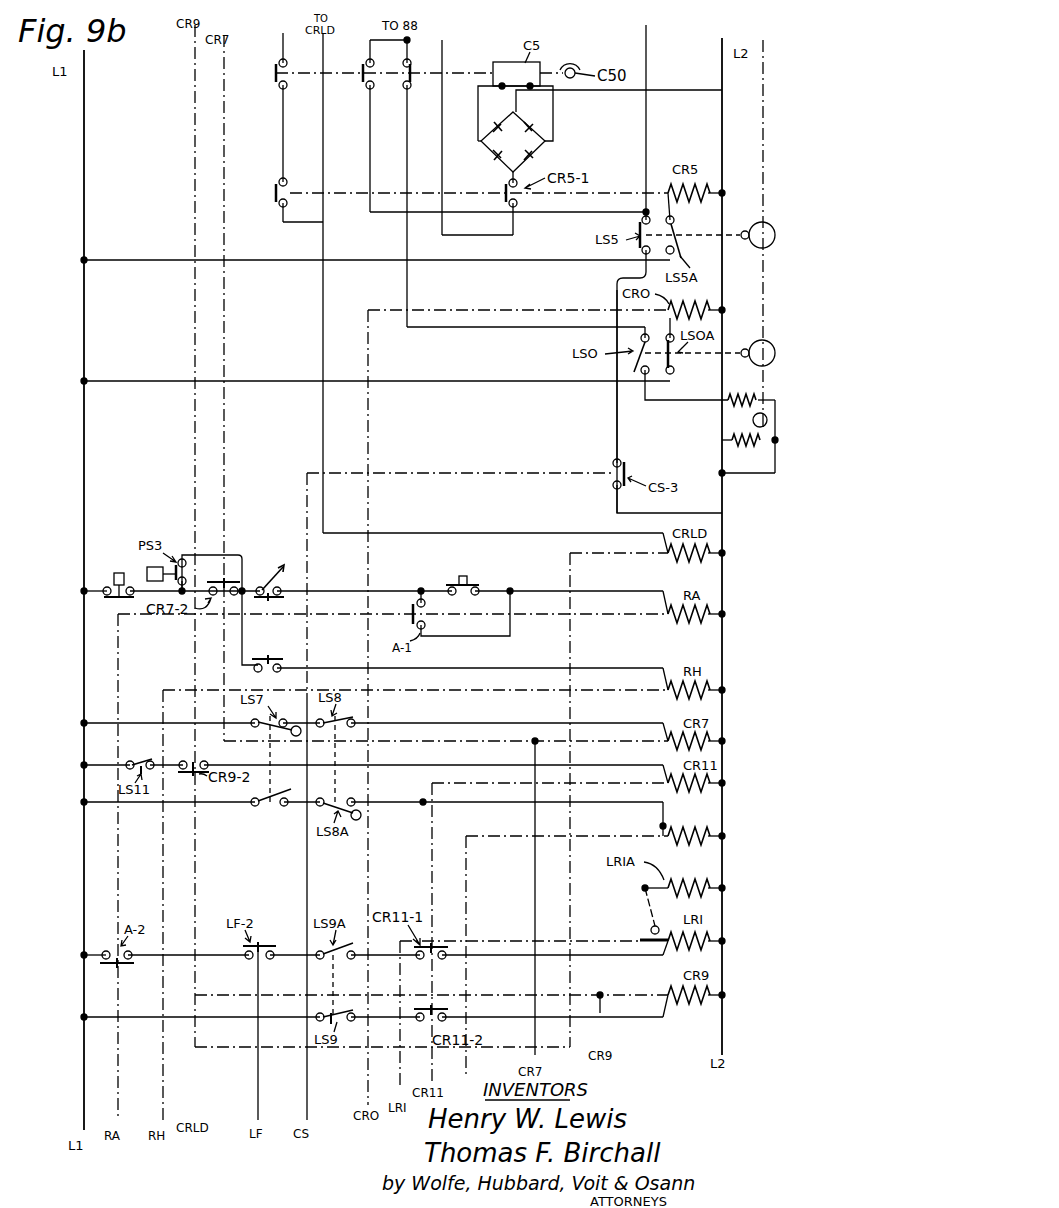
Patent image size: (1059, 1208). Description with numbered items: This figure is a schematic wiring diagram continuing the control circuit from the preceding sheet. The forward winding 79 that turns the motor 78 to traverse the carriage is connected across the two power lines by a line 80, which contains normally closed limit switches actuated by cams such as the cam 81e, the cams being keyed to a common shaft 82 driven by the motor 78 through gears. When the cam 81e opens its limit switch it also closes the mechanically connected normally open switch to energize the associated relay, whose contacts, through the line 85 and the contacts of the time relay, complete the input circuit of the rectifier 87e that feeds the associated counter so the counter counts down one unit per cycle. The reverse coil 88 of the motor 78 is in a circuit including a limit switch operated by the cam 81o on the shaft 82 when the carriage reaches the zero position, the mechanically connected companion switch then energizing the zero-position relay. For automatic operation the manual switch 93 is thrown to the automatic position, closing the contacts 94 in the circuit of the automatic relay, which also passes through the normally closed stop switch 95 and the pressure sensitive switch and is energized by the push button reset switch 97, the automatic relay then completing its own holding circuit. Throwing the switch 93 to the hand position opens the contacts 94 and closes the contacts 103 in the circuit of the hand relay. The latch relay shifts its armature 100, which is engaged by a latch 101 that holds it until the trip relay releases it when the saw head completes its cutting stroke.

The motor 78 is at (745, 428).
The forward winding 79 is at (732, 444).
The line 80 is at (617, 424).
The cam 81e is at (758, 224).
The cam 81o is at (758, 342).
The common shaft 82 is at (749, 216).
The line 85 is at (439, 48).
The rectifier 87e is at (542, 159).
The reverse coil 88 is at (728, 397).
The manual switch 93 is at (283, 550).
The contacts 94 is at (295, 600).
The STOP switch 95 is at (111, 606).
The push button reset switch 97 is at (488, 588).
The armature 100 is at (640, 941).
The latch 101 is at (641, 928).
The contacts 103 is at (278, 657).